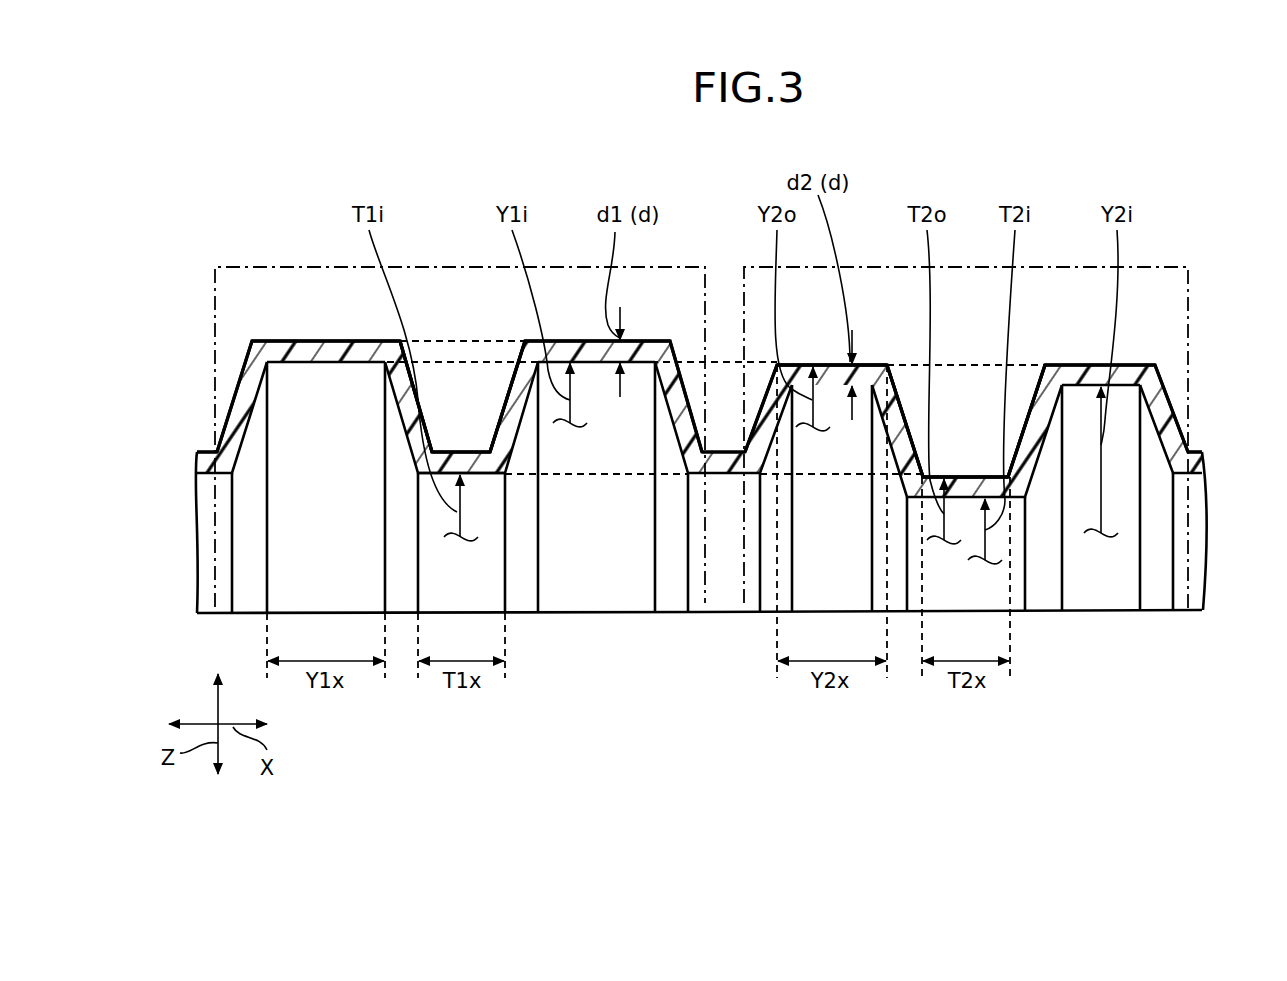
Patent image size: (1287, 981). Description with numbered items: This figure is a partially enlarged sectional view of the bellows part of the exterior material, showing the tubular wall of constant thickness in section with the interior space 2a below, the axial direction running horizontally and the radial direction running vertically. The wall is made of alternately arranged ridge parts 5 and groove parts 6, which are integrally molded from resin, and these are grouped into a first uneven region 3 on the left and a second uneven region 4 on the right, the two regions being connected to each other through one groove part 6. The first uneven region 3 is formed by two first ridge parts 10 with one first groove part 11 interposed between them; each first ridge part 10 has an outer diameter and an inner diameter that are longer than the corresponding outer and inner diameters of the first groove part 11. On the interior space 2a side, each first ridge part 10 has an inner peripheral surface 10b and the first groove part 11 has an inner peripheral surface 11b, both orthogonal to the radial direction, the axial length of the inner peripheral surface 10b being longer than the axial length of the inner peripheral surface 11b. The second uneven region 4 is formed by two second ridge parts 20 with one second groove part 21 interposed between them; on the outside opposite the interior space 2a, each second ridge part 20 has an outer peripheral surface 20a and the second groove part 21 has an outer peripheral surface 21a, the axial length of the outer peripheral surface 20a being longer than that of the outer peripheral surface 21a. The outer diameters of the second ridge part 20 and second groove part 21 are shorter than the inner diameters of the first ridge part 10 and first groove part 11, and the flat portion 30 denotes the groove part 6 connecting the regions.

The interior space 2a is at (283, 541).
The first uneven region 3 is at (214, 288).
The second uneven region 4 is at (1192, 283).
The ridge part 5 is at (703, 284).
The groove part 6 is at (700, 340).
The first ridge part 10 is at (318, 341).
The inner peripheral surface 10b is at (322, 363).
The first groove part 11 is at (448, 453).
The inner peripheral surface 11b is at (485, 473).
The second ridge part 20 is at (870, 363).
The outer peripheral surface 20a is at (838, 363).
The second groove part 21 is at (980, 477).
The outer peripheral surface 21a is at (967, 475).
The flat portion 30 is at (208, 455).